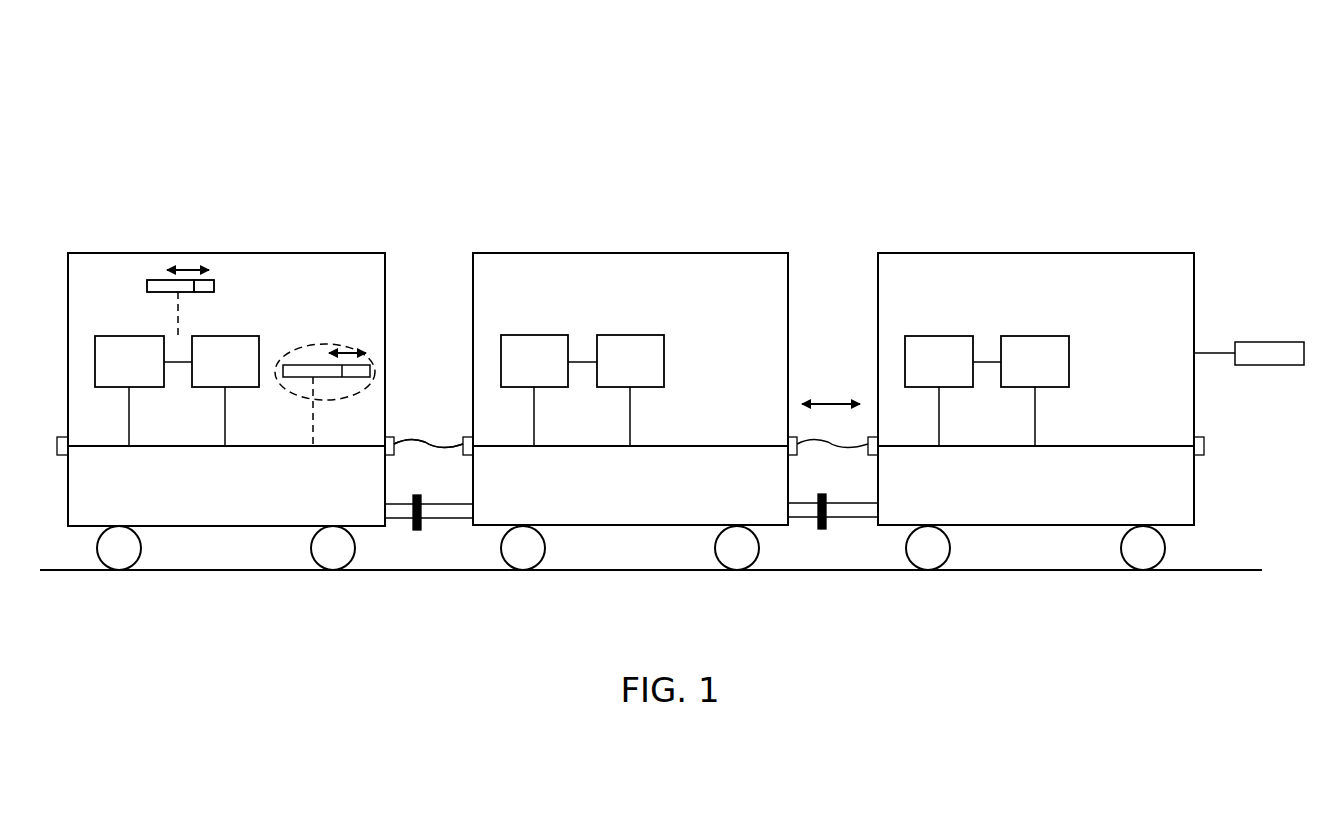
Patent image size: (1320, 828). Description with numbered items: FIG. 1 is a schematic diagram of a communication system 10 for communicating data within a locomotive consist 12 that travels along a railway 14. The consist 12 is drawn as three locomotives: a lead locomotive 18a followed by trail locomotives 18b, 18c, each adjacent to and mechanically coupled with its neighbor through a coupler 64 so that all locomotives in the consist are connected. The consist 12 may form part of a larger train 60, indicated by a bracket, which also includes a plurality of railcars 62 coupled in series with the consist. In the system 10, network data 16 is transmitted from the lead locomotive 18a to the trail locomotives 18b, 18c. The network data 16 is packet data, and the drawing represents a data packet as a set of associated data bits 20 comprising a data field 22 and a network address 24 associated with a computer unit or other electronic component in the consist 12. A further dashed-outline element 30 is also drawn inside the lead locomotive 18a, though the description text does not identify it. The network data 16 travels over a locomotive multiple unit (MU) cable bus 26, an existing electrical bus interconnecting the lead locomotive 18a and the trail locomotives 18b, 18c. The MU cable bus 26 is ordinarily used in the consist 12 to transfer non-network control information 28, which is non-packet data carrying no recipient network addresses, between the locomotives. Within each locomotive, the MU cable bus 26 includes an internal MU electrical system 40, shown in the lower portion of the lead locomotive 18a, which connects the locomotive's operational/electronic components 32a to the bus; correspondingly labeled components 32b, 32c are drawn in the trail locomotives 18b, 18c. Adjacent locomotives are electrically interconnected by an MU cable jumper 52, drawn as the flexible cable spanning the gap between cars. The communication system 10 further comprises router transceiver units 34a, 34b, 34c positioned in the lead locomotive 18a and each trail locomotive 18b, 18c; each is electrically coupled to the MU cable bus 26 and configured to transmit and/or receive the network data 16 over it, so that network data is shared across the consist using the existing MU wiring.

The communication system 10 is at (402, 90).
The locomotive consist 12 is at (1113, 212).
The railway 14 is at (52, 572).
The network data 16 is at (225, 257).
The lead locomotive 18a is at (93, 253).
The trail locomotive 18b is at (630, 253).
The trail locomotive 18c is at (1036, 253).
The set of associated data bits 20 is at (147, 247).
The data field 22 is at (147, 286).
The network address 24 is at (214, 286).
The MU cable bus 26 is at (422, 417).
The non-network control information 28 is at (831, 401).
The alternative sensor location 30 is at (325, 344).
The operational/electronic components 32a is at (150, 388).
The controller of second vehicle 32b is at (534, 335).
The controller of third vehicle 32c is at (939, 336).
The router transceiver unit 34a is at (252, 388).
The router transceiver unit 34b is at (630, 335).
The router transceiver unit 34c is at (1035, 336).
The internal MU electrical system 40 is at (265, 461).
The MU cable jumper 52 is at (438, 464).
The train 60 is at (1205, 151).
The railcars 62 is at (1271, 342).
The coupler 64 is at (440, 513).